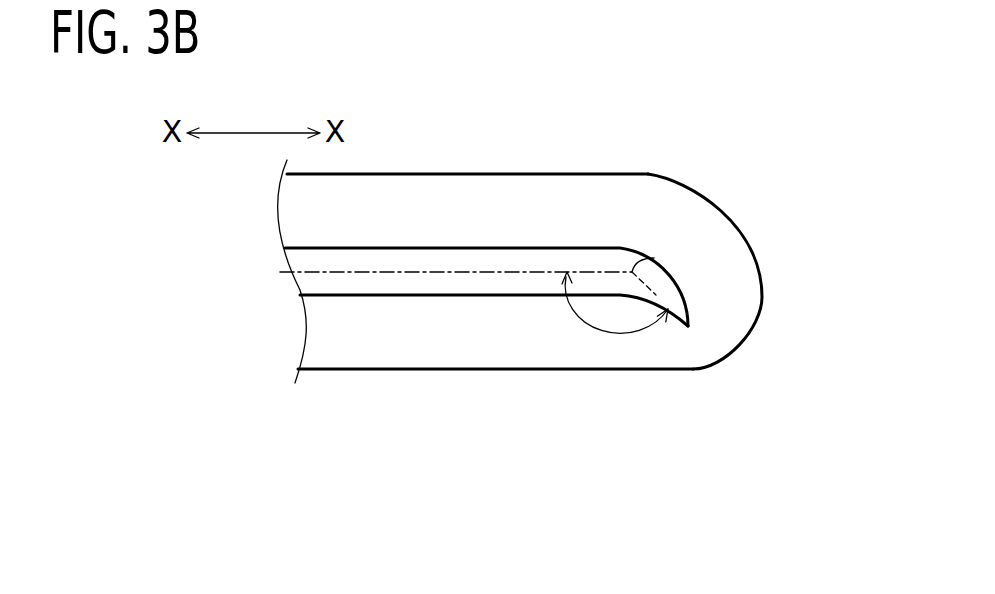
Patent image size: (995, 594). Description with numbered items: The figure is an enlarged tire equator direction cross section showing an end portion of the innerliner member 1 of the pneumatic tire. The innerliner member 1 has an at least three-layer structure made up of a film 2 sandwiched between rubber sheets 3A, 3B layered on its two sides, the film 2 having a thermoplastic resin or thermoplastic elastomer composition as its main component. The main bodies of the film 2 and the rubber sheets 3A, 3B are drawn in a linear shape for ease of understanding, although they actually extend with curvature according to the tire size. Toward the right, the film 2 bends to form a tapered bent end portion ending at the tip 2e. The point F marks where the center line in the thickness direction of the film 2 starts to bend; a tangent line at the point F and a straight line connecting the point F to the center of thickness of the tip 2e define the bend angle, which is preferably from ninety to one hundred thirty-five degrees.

The innerliner member 1 is at (557, 264).
The film 2 is at (554, 202).
The tip 2e is at (692, 327).
The rubber sheet 3A is at (383, 345).
The rubber sheet 3B is at (542, 195).
The bend starting point F is at (648, 258).